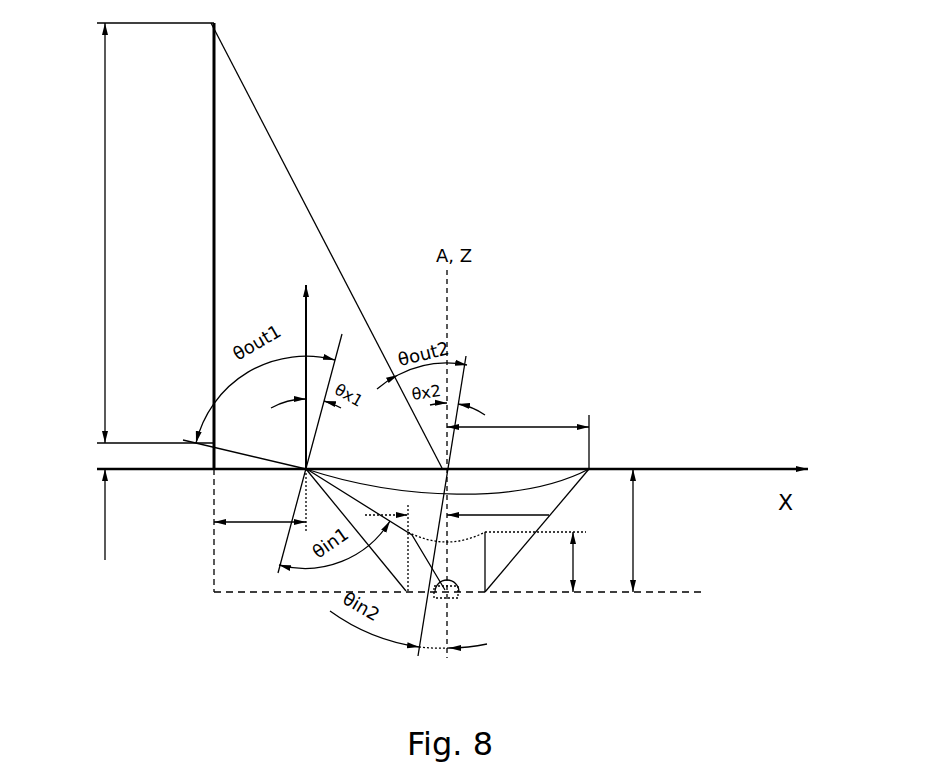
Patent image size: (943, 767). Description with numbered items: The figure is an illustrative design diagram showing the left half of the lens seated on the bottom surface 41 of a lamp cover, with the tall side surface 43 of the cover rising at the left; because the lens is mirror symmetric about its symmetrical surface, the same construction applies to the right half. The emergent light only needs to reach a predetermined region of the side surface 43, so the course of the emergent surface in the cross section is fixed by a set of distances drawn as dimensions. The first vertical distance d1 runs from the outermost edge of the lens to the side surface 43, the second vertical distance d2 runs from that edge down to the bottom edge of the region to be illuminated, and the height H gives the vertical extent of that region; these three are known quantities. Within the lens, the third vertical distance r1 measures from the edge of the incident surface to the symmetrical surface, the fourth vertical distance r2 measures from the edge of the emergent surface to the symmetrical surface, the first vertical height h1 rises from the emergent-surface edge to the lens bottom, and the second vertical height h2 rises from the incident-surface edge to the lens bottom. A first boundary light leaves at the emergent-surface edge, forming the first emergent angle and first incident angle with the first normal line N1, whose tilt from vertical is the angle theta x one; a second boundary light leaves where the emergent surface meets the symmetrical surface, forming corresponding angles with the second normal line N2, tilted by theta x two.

The bottom surface 41 is at (661, 592).
The side surface 43 is at (212, 172).
The first normal line N1 is at (317, 448).
The second normal line N2 is at (454, 499).
The height of the region to be illuminated H is at (89, 233).
The first vertical distance d1 is at (260, 509).
The second vertical distance d2 is at (85, 514).
The third vertical distance r1 is at (457, 504).
The fourth vertical distance r2 is at (518, 414).
The first vertical height h1 is at (615, 530).
The second vertical height h2 is at (555, 562).